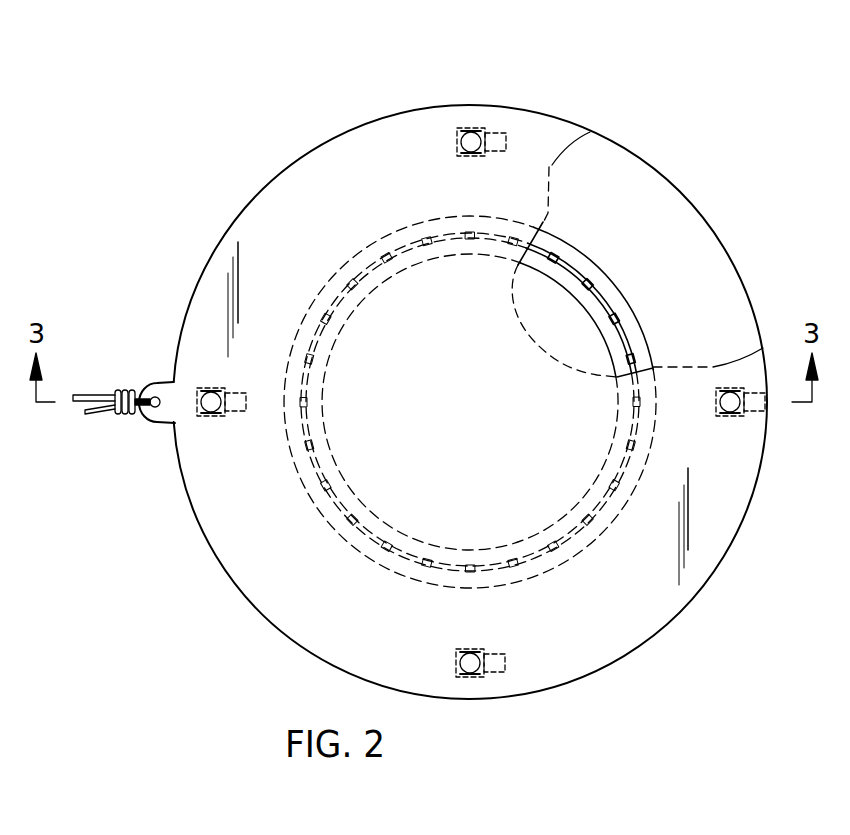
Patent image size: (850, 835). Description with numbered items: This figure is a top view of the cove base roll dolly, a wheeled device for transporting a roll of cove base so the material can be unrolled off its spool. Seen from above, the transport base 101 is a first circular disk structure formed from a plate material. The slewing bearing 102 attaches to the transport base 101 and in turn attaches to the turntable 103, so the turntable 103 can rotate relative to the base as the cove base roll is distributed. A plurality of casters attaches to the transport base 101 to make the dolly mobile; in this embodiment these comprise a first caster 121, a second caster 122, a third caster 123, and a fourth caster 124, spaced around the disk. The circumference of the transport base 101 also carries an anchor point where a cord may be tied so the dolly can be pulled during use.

The transport base 101 is at (687, 228).
The slewing bearing 102 is at (647, 333).
The turntable 103 is at (698, 553).
The first caster 121 is at (506, 135).
The second caster 122 is at (757, 413).
The third caster 123 is at (505, 670).
The fourth caster 124 is at (232, 388).